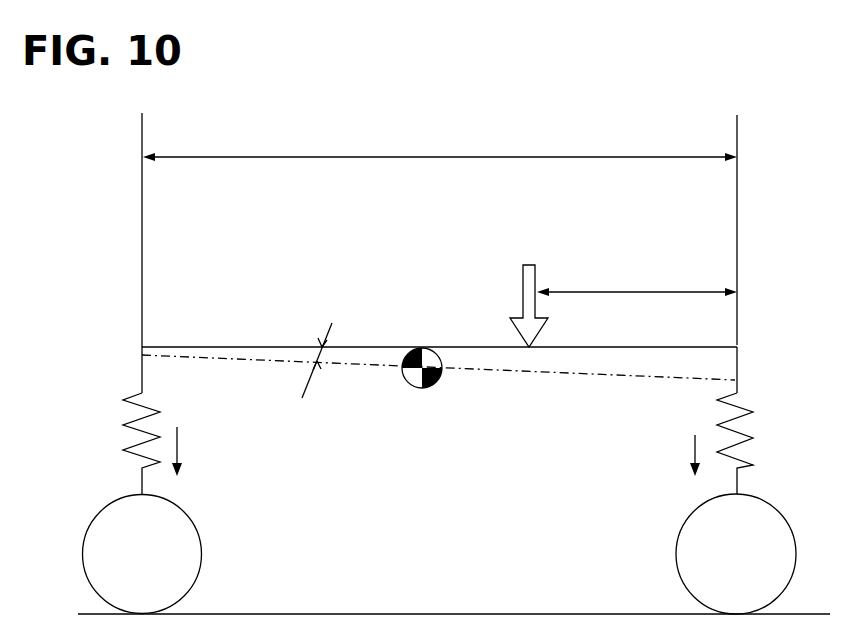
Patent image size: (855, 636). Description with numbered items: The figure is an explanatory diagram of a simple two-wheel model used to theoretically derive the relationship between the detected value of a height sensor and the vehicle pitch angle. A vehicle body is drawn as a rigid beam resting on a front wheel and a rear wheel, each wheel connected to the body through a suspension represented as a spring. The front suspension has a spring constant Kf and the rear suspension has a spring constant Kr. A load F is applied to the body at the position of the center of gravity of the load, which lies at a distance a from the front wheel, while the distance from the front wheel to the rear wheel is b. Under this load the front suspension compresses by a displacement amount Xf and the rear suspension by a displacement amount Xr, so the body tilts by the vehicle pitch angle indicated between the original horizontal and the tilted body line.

The spring constant of the rear suspension Kr is at (122, 444).
The spring constant of the front suspension Kf is at (754, 443).
The displacement amount of the rear suspension Xr is at (192, 451).
The displacement amount of the front suspension Xf is at (682, 454).
The load applied to the vehicle F is at (529, 290).
The distance from the front wheel to the center of gravity of the load a is at (637, 276).
The distance from the front wheel to the rear wheel b is at (440, 143).